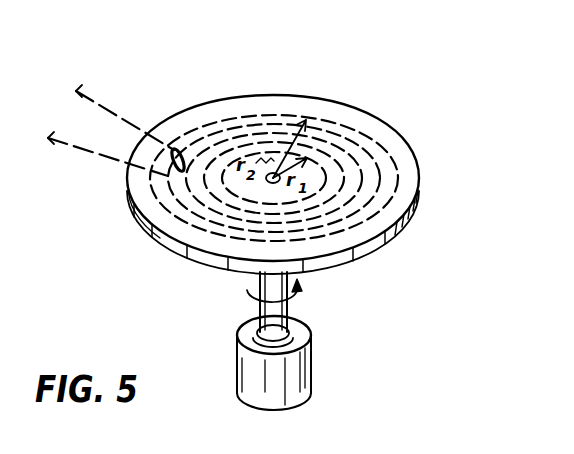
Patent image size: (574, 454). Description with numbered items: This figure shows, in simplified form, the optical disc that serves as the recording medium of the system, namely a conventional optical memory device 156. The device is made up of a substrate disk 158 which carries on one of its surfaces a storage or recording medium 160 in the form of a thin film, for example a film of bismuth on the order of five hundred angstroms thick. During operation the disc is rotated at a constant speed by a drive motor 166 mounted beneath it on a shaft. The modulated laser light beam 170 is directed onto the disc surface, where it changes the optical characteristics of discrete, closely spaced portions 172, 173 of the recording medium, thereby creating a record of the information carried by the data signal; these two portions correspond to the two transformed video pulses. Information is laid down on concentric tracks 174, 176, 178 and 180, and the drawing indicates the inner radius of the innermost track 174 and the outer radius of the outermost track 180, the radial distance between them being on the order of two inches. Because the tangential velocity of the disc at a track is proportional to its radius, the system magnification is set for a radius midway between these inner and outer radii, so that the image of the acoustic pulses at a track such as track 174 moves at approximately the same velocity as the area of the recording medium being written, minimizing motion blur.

The optical memory device 156 is at (364, 110).
The substrate disk 158 is at (366, 250).
The storage or recording medium 160 is at (157, 214).
The motor 166 is at (301, 369).
The modulated laser light beam 170 is at (113, 107).
The portion of recording medium 172 is at (168, 173).
The portion of recording medium 173 is at (182, 148).
The innermost track 174 is at (221, 197).
The concentric track 176 is at (363, 140).
The concentric track 178 is at (363, 165).
The outermost track 180 is at (380, 178).